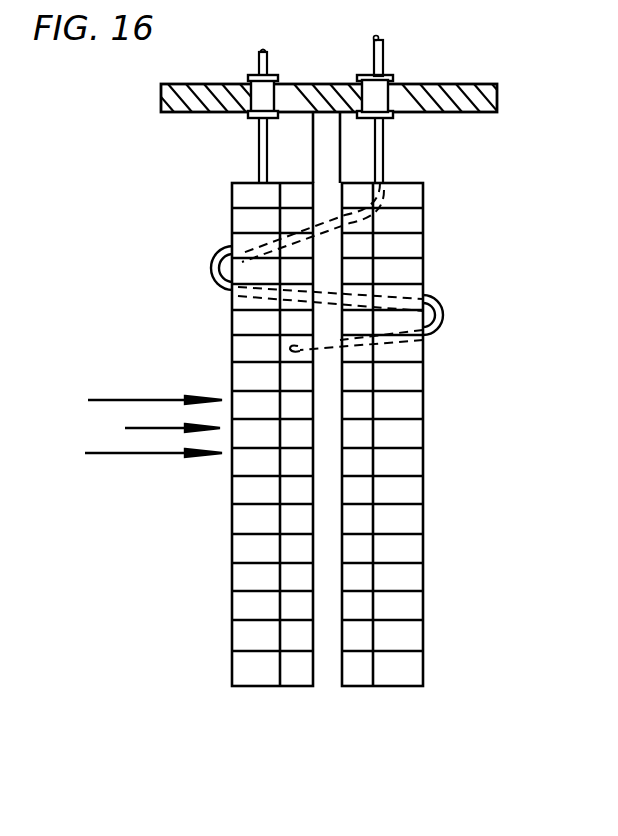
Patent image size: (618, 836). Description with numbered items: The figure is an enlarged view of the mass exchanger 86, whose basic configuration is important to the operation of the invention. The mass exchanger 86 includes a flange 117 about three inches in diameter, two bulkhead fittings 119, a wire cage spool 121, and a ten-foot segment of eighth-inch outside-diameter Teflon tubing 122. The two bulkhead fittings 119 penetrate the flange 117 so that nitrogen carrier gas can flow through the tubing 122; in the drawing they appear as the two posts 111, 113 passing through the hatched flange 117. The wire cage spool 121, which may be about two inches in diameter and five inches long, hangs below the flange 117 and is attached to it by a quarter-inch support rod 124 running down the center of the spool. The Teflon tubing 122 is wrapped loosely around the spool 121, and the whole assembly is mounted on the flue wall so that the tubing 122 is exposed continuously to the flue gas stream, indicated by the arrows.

The mass exchanger 86 is at (317, 399).
The conductor post 111 is at (383, 46).
The conductor post 113 is at (272, 58).
The flange 117 is at (497, 90).
The bulkhead fittings 119 is at (250, 76).
The wire cage spool 121 is at (423, 398).
The Teflon tubing 122 is at (214, 268).
The support rod 124 is at (328, 466).